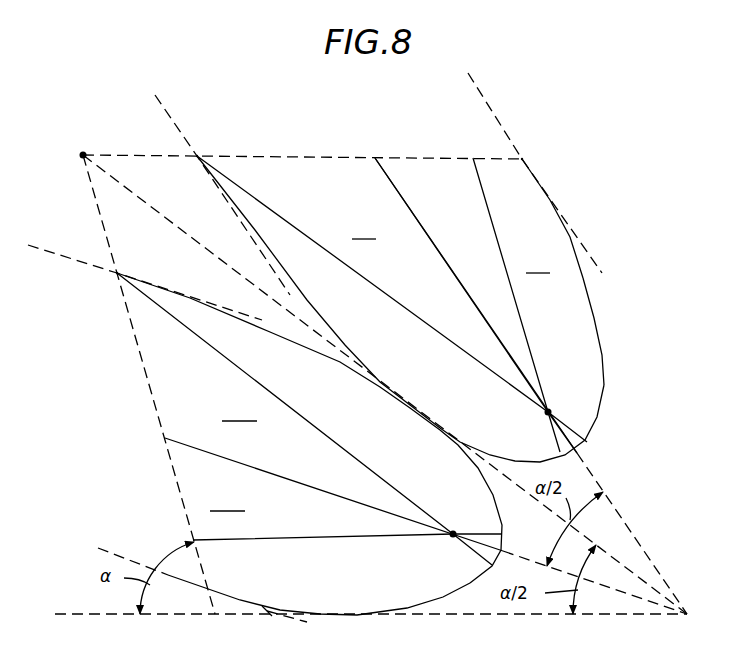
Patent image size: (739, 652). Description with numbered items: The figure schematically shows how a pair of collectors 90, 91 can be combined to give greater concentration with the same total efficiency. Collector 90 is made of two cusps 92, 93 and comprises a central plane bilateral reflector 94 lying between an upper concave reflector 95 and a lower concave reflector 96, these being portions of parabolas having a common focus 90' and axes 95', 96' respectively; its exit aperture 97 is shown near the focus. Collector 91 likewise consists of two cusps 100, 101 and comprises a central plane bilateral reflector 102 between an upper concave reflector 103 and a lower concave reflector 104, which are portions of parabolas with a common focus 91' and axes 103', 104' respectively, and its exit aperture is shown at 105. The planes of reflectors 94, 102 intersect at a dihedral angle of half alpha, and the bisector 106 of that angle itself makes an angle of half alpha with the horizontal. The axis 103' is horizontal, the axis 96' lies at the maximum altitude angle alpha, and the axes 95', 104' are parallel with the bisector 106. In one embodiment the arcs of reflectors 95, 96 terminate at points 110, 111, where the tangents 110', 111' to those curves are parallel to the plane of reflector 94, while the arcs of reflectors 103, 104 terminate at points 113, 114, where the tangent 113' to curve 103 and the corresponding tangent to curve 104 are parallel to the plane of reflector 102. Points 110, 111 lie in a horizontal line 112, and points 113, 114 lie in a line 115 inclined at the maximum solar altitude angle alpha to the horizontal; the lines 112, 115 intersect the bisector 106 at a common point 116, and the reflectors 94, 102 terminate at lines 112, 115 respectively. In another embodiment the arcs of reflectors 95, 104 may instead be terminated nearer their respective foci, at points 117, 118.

The collector 90 is at (552, 366).
The common focus 90' is at (518, 410).
The collector 91 is at (109, 479).
The common focus 91' is at (446, 554).
The cusp 92 is at (538, 263).
The cusp 93 is at (364, 229).
The central plane bilateral reflector 94 is at (459, 282).
The upper concave reflector 95 is at (573, 331).
The axis 95' is at (392, 299).
The lower concave reflector 96 is at (318, 292).
The axis 96' is at (496, 305).
The exit aperture 97 is at (568, 427).
The cusp 100 is at (239, 411).
The cusp 101 is at (227, 501).
The central plane bilateral reflector 102 is at (310, 485).
The upper concave reflector 103 is at (278, 351).
The axis 103' is at (347, 525).
The lower concave reflector 104 is at (319, 583).
The axis 104' is at (304, 419).
The exit aperture 105 is at (472, 537).
The bisector 106 is at (198, 236).
The point 110 is at (553, 139).
The tangent 110' is at (535, 168).
The point 111 is at (220, 126).
The tangent 111' is at (222, 172).
The horizontal line 112 is at (275, 155).
The point 113 is at (134, 257).
The tangent 113' is at (142, 255).
The point 114 is at (158, 524).
The line 115 is at (153, 401).
The common point 116 is at (85, 152).
The point 117 is at (573, 240).
The point 118 is at (267, 612).